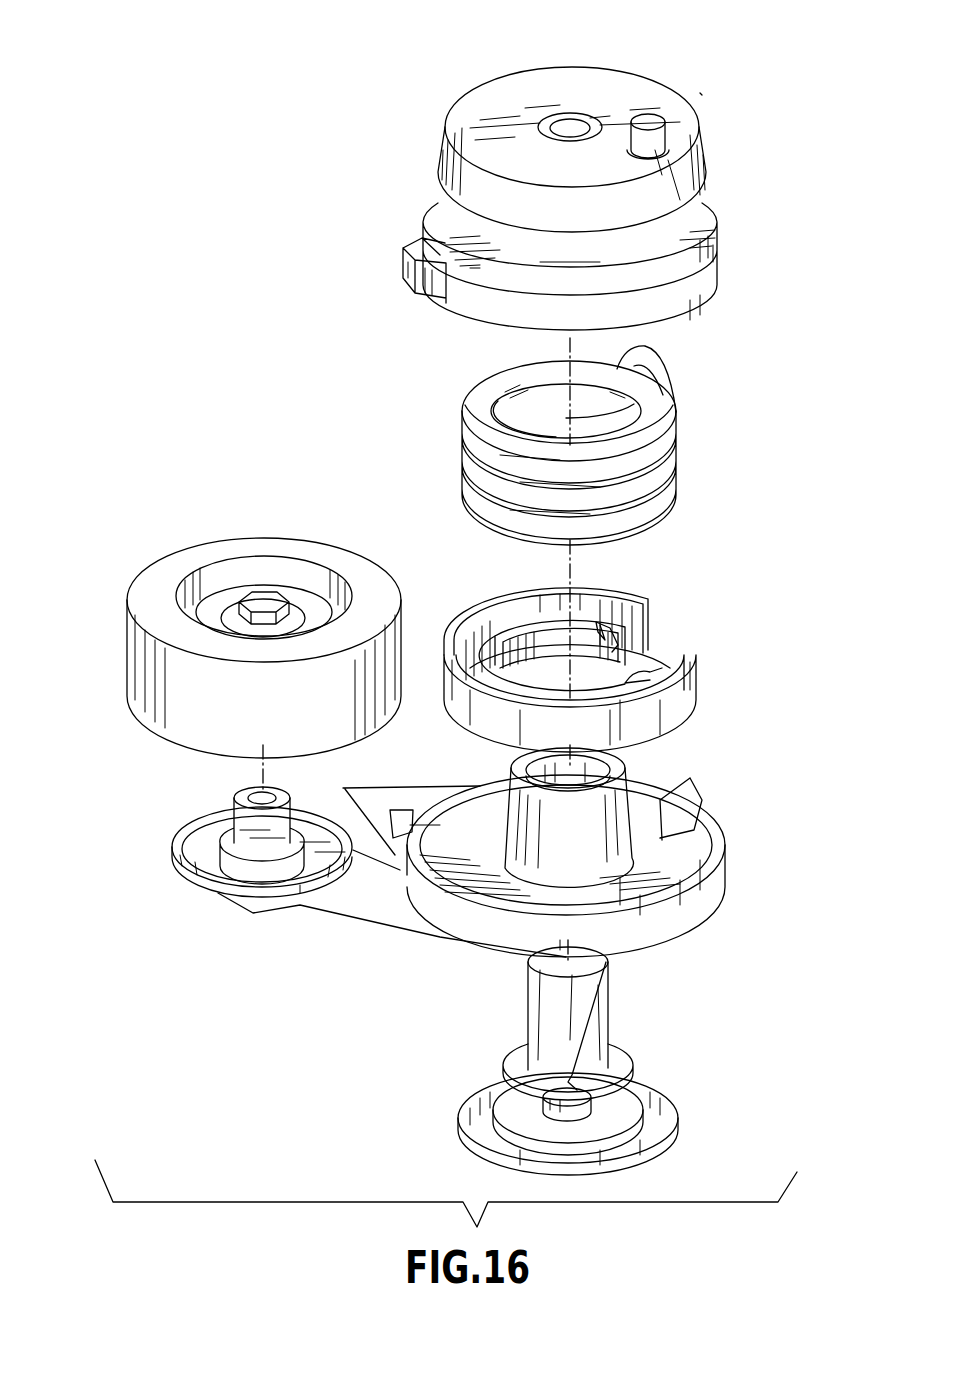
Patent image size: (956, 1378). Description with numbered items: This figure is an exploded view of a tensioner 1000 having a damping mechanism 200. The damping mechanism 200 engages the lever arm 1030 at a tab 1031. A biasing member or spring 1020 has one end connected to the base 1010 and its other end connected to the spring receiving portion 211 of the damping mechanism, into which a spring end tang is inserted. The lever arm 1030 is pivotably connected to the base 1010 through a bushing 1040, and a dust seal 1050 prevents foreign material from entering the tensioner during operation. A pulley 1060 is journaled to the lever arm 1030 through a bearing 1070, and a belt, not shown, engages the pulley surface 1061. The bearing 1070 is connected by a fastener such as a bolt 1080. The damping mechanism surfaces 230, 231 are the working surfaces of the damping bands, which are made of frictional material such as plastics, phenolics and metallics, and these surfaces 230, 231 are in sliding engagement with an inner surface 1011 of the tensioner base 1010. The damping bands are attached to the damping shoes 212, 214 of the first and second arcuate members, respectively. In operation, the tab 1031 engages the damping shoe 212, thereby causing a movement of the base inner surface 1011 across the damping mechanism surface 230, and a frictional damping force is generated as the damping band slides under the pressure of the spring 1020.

The belt tensioner 1000 is at (700, 93).
The base 1010 is at (703, 188).
The inner surface 1011 is at (484, 292).
The spring 1020 is at (665, 392).
The damping mechanism 200 is at (713, 650).
The working surface 230 is at (616, 585).
The working surface 231 is at (662, 712).
The spring receiving portion 211 is at (497, 632).
The damping shoe 212 is at (640, 652).
The damping shoe 214 is at (650, 666).
The lever arm 1030 is at (725, 868).
The tab 1031 is at (688, 834).
The bushing 1040 is at (612, 1008).
The dust seal 1050 is at (674, 1122).
The pulley 1060 is at (126, 660).
The pulley surface 1061 is at (203, 722).
The bearing 1070 is at (208, 592).
The bolt 1080 is at (268, 592).